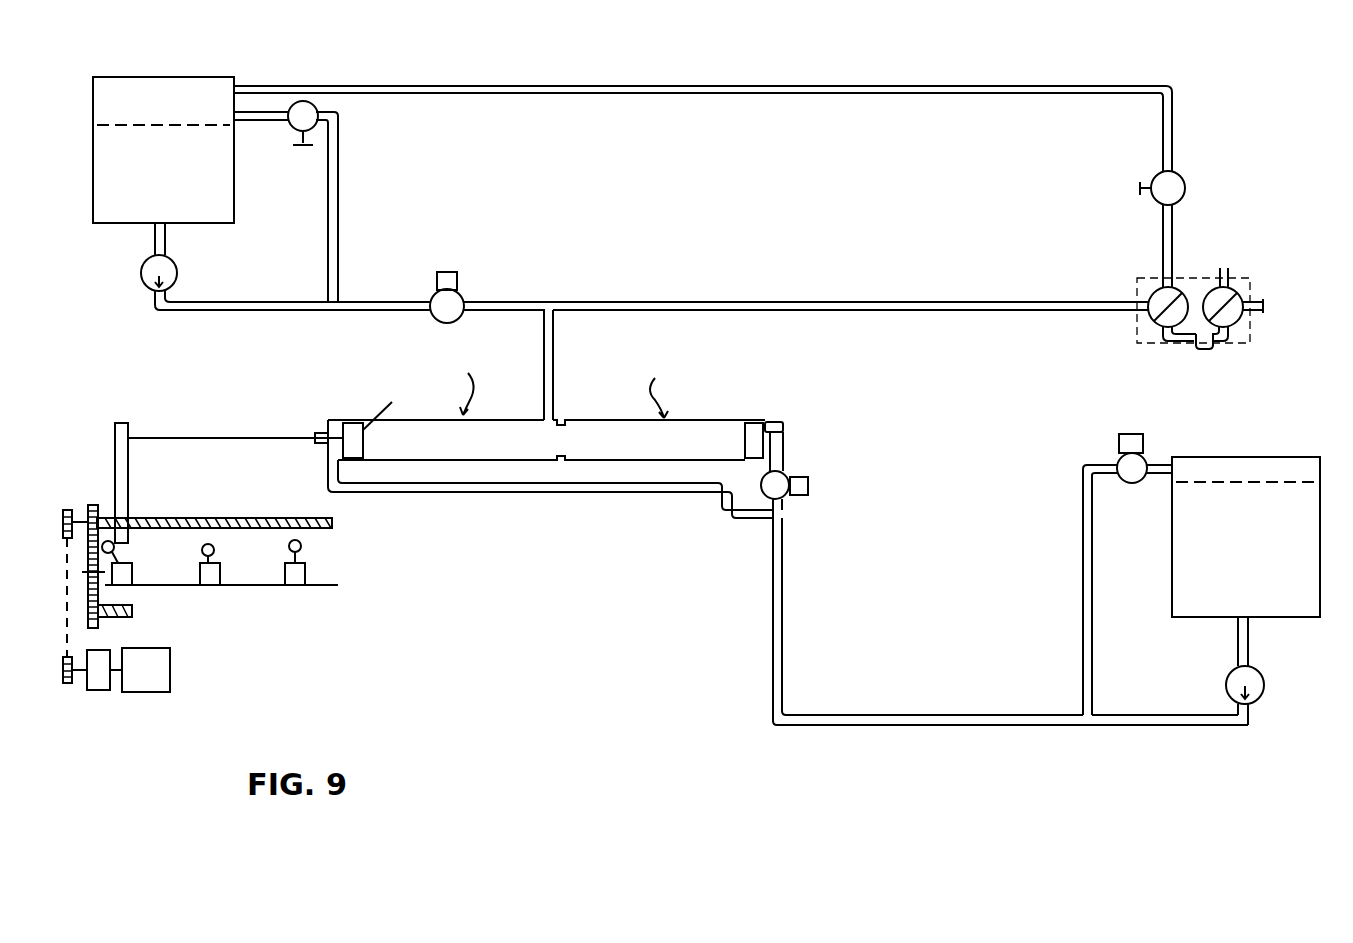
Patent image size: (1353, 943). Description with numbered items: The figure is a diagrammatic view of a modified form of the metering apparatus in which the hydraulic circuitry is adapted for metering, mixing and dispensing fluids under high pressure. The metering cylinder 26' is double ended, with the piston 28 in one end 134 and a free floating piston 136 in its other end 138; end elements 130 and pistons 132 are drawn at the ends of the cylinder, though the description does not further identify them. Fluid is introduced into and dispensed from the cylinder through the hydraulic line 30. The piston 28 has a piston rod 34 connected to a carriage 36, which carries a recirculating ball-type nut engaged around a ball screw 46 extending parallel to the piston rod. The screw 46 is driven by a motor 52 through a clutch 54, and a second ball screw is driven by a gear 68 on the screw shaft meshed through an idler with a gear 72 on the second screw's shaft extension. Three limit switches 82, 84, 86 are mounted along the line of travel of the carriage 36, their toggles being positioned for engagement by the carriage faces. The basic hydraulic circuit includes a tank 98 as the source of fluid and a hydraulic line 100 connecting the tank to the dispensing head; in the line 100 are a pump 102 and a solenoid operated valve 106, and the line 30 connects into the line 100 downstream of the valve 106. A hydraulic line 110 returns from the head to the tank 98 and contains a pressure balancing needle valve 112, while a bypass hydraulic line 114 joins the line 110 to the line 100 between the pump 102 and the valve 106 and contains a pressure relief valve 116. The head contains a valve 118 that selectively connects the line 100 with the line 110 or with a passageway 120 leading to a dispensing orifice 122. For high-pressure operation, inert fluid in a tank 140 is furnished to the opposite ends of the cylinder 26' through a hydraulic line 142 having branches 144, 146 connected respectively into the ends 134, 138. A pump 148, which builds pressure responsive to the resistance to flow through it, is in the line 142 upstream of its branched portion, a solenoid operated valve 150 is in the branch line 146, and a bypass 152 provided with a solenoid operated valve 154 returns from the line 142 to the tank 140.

The metering cylinder 26' is at (584, 421).
The piston 28 is at (352, 427).
The hydraulic line 30 is at (553, 345).
The piston rod 34 is at (205, 437).
The carriage 36 is at (128, 485).
The ball screw 46 is at (220, 518).
The motor 52 is at (170, 677).
The clutch 54 is at (100, 690).
The gear 68 is at (88, 510).
The gear 72 is at (98, 627).
The limit switch 82 is at (132, 576).
The limit switch 84 is at (220, 576).
The limit switch 86 is at (305, 576).
The tank 98 is at (234, 182).
The hydraulic line 100 is at (1075, 286).
The pump 102 is at (177, 272).
The solenoid operated valve 106 is at (459, 290).
The hydraulic line 110 is at (757, 95).
The pressure balancing needle valve 112 is at (1184, 180).
The bypass hydraulic line 114 is at (338, 196).
The pressure relief valve 116 is at (318, 112).
The valve 118 is at (1188, 290).
The passageway 120 is at (1176, 344).
The dispensing orifice 122 is at (1208, 352).
The end seal 130 is at (330, 427).
The piston 132 is at (743, 430).
The cylinder end 134 is at (492, 418).
The free floating piston 136 is at (752, 458).
The cylinder end 138 is at (612, 420).
The tank 140 is at (1288, 612).
The hydraulic line 142 is at (937, 712).
The branch line 144 is at (613, 497).
The branch line 146 is at (790, 460).
The pump 148 is at (1264, 690).
The solenoid operated valve 150 is at (793, 470).
The bypass 152 is at (1083, 600).
The solenoid operated valve 154 is at (1147, 455).